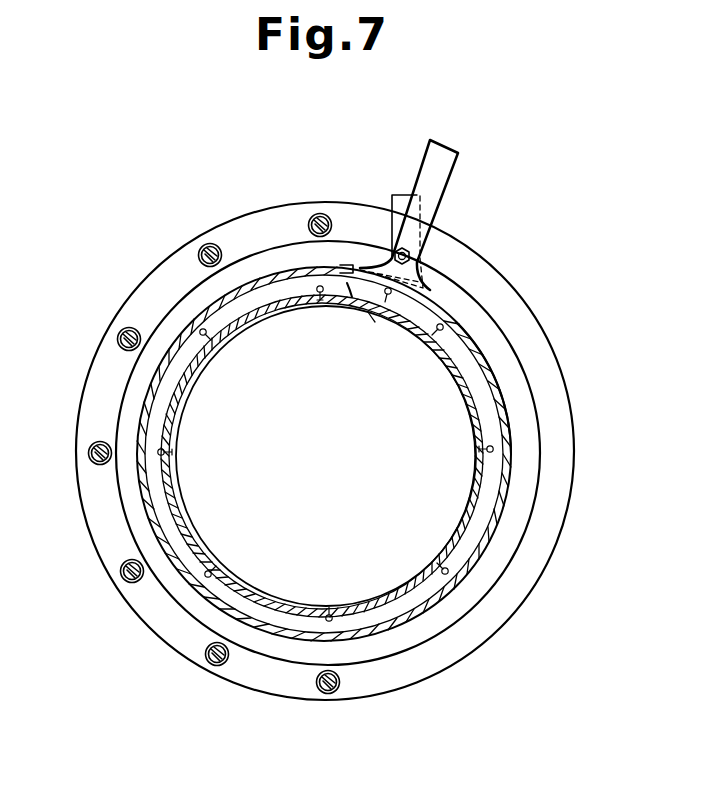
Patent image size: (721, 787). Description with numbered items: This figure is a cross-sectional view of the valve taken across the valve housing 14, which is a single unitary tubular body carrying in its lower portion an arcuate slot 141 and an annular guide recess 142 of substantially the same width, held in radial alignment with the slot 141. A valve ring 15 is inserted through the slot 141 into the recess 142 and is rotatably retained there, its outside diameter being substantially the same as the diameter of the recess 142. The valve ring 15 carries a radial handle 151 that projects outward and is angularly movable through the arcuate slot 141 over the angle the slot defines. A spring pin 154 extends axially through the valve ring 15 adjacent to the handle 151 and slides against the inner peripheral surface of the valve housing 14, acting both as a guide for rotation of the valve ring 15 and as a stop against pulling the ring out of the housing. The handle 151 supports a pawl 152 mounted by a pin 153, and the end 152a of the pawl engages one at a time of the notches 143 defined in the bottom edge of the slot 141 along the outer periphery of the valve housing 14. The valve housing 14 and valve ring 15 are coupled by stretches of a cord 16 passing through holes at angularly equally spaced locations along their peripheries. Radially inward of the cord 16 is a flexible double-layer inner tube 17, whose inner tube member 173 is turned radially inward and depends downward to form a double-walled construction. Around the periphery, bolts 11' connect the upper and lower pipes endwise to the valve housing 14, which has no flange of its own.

The bolts 11' is at (190, 457).
The valve housing 14 is at (146, 408).
The valve ring 15 is at (215, 322).
The cord 16 is at (317, 297).
The flexible double-layer inner tube 17 is at (481, 425).
The arcuate slot 141 is at (347, 283).
The annular guide recess 142 is at (210, 588).
The notches 143 is at (490, 355).
The radial handle 151 is at (450, 160).
The pawl 152 is at (400, 195).
The end of pawl 152a is at (354, 265).
The pin 153 is at (411, 254).
The spring pin 154 is at (372, 314).
The inner tube member 173 is at (177, 468).